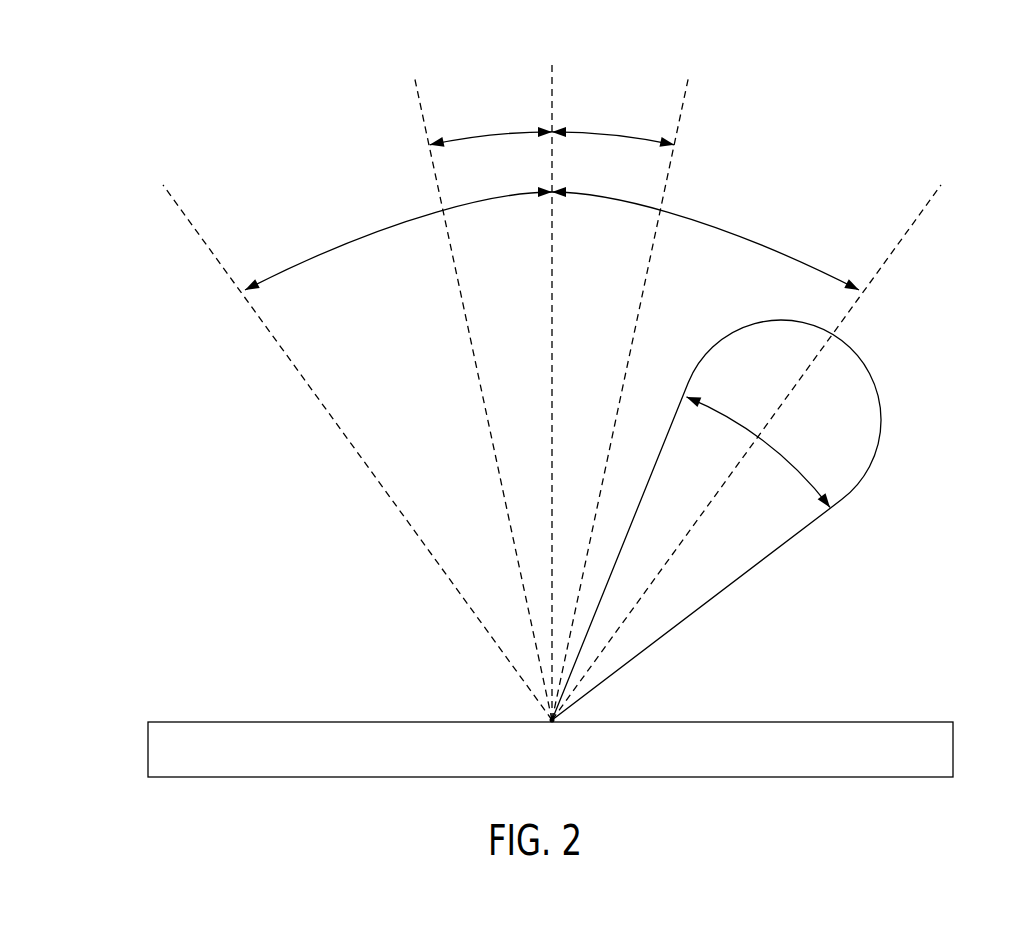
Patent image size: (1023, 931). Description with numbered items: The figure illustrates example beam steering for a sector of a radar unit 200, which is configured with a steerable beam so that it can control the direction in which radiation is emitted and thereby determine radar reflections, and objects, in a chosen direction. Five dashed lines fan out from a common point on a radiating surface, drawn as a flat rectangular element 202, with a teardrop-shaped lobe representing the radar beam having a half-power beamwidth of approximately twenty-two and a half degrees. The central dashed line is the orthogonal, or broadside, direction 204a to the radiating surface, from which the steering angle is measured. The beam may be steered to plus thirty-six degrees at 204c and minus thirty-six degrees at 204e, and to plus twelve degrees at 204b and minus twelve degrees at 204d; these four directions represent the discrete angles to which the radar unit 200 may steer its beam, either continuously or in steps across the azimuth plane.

The radar unit 200 is at (104, 119).
The light source / beam 202 is at (273, 721).
The orthogonal (broadside) direction 204a is at (538, 76).
The +12 degree steering direction 204b is at (698, 107).
The +36 degree steering direction 204c is at (931, 224).
The −12 degree steering direction 204d is at (406, 121).
The −36 degree steering direction 204e is at (177, 227).